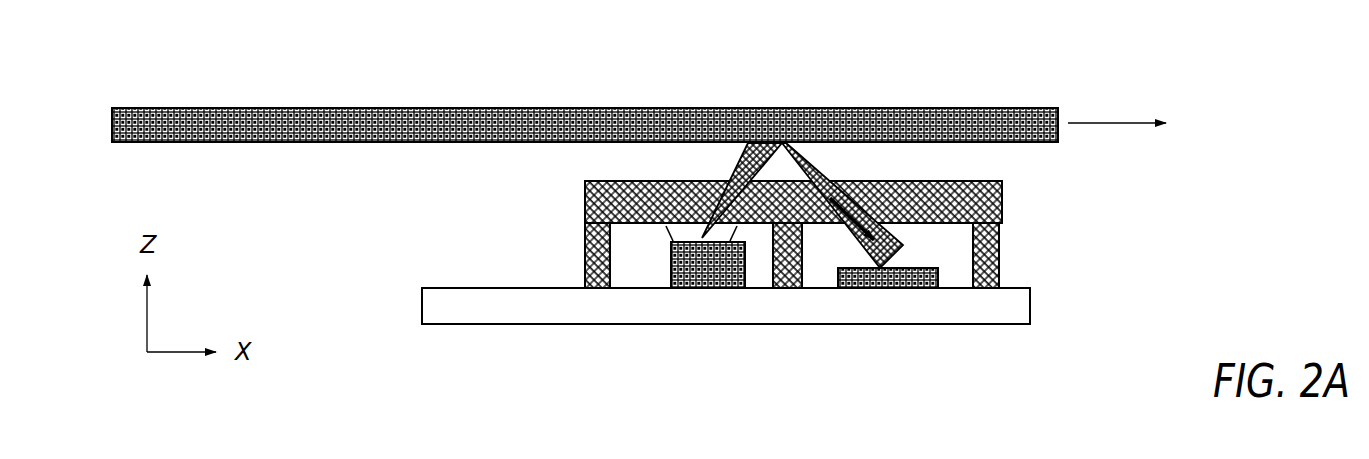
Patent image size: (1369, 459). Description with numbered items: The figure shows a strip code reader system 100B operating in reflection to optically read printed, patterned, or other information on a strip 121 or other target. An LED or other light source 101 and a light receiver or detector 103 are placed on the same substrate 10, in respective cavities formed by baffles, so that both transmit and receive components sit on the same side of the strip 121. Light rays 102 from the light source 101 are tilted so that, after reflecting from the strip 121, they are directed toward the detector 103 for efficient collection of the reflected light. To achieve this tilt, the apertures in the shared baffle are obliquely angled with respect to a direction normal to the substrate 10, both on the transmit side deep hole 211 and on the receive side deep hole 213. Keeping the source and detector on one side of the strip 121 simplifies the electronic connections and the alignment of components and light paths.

The strip code reader system 100B is at (469, 369).
The strip 121 is at (1028, 107).
The light rays 102 is at (578, 125).
The receive side deep hole 213 is at (1003, 198).
The transmit side deep hole 211 is at (585, 205).
The light source 101 is at (662, 273).
The light receiver or detector 103 is at (951, 275).
The substrate 10 is at (960, 315).